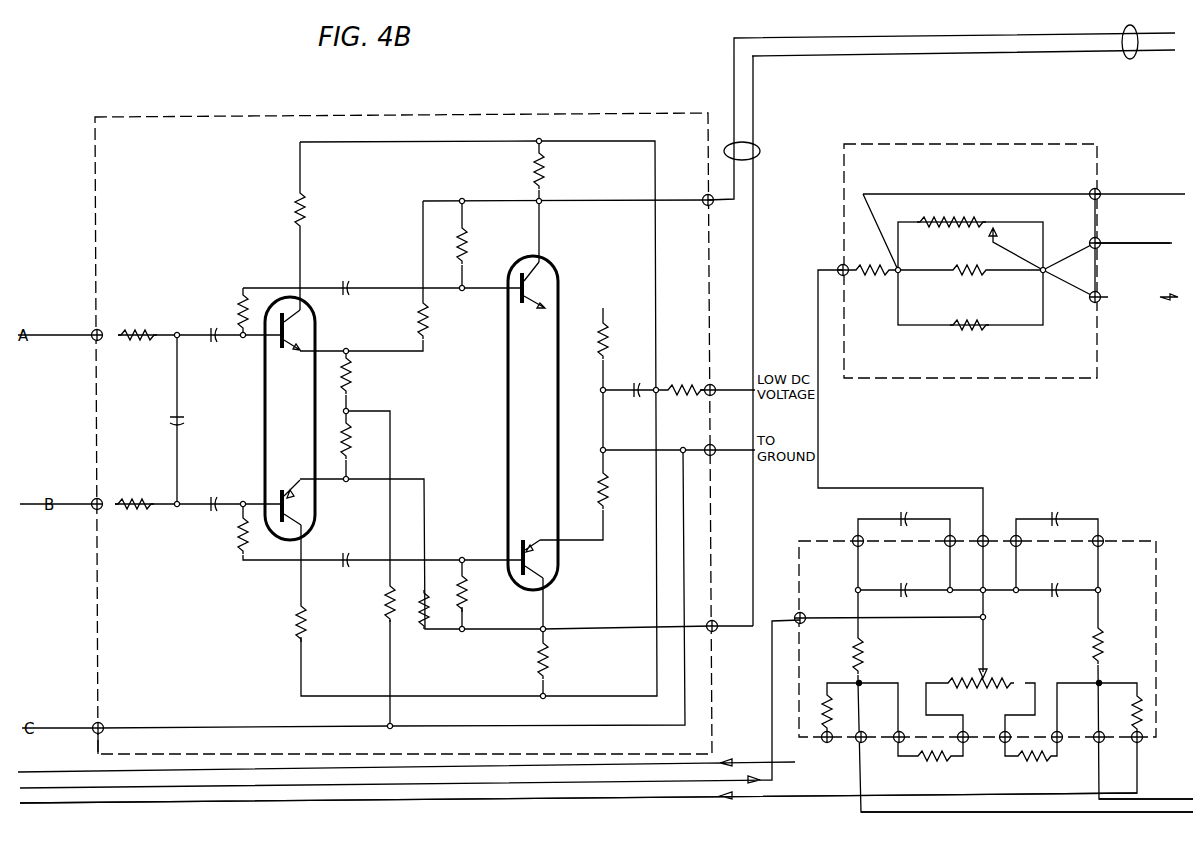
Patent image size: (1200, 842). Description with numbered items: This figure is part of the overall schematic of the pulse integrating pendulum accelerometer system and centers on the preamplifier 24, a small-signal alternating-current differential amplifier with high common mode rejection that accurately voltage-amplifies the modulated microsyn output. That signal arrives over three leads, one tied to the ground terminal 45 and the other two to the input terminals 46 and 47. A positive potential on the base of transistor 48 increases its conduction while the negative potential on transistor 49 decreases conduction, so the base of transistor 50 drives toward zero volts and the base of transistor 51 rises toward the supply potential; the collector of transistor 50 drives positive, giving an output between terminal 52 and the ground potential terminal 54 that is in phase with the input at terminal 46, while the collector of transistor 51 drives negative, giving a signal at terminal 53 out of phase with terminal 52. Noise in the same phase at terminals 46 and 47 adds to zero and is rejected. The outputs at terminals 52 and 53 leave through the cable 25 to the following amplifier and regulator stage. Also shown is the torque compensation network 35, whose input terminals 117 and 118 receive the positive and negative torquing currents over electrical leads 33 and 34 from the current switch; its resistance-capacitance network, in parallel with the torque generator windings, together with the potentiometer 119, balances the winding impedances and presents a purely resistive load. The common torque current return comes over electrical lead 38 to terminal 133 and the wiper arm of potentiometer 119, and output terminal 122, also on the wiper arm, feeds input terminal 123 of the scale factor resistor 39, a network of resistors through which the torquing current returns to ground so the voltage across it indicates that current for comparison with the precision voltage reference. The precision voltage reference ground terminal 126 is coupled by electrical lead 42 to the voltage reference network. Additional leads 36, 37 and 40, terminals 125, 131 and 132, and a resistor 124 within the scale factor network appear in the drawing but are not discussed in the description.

The preamplifier 24 is at (399, 112).
The cable 25 is at (756, 144).
The electrical lead 33 is at (1160, 796).
The electrical lead 34 is at (1163, 810).
The torque compensation network 35 is at (1118, 536).
The lead 36 is at (58, 802).
The lead 37 is at (58, 771).
The electrical lead 38 is at (58, 787).
The scale factor resistor 39 is at (1102, 140).
The lead 40 is at (1143, 190).
The electrical lead 42 is at (1143, 240).
The ground terminal 45 is at (102, 724).
The input terminal 46 is at (101, 330).
The input terminal 47 is at (100, 500).
The transistor 48 is at (279, 305).
The transistor 49 is at (284, 535).
The transistor 50 is at (543, 273).
The transistor 51 is at (547, 572).
The output terminal 52 is at (712, 205).
The output terminal 53 is at (716, 620).
The ground potential terminal 54 is at (714, 455).
The input terminal 117 is at (858, 745).
The input terminal 118 is at (1097, 745).
The potentiometer 119 is at (1007, 680).
The output terminal 122 is at (988, 534).
The input terminal 123 is at (840, 266).
The resistor 124 is at (935, 328).
The terminal 125 is at (1098, 188).
The precision voltage reference ground terminal 126 is at (1099, 238).
The terminal 131 is at (1139, 745).
The terminal 132 is at (825, 745).
The terminal 133 is at (797, 613).